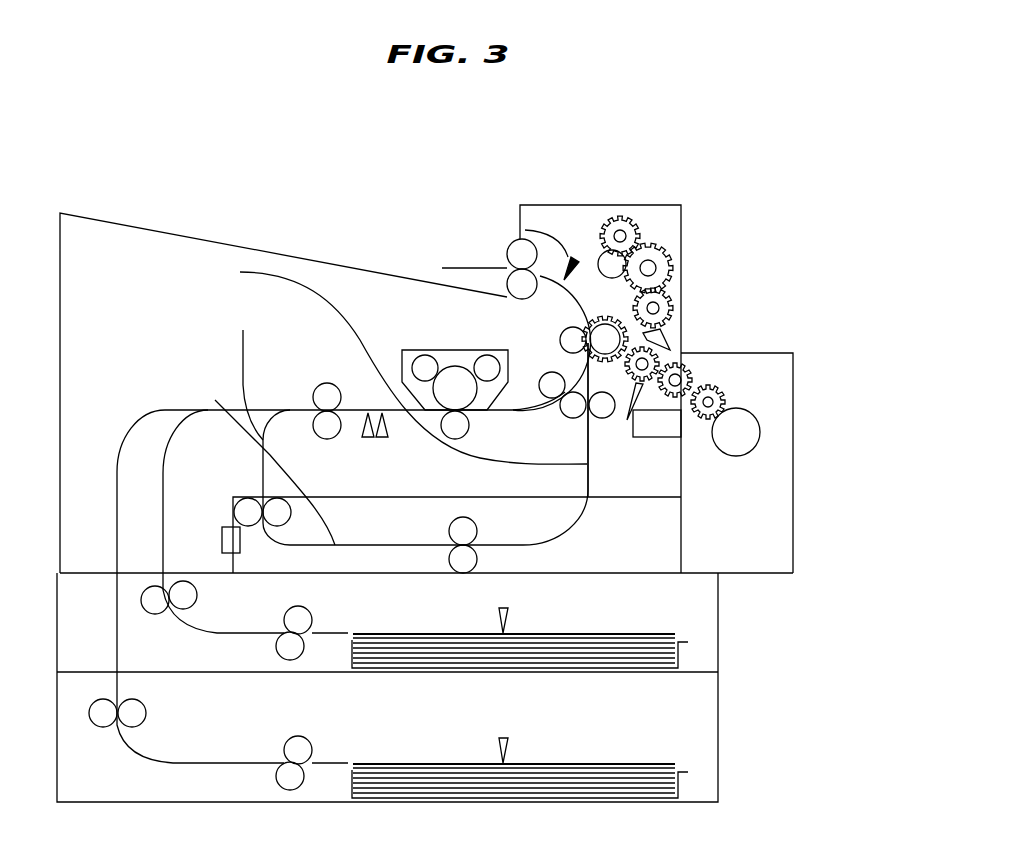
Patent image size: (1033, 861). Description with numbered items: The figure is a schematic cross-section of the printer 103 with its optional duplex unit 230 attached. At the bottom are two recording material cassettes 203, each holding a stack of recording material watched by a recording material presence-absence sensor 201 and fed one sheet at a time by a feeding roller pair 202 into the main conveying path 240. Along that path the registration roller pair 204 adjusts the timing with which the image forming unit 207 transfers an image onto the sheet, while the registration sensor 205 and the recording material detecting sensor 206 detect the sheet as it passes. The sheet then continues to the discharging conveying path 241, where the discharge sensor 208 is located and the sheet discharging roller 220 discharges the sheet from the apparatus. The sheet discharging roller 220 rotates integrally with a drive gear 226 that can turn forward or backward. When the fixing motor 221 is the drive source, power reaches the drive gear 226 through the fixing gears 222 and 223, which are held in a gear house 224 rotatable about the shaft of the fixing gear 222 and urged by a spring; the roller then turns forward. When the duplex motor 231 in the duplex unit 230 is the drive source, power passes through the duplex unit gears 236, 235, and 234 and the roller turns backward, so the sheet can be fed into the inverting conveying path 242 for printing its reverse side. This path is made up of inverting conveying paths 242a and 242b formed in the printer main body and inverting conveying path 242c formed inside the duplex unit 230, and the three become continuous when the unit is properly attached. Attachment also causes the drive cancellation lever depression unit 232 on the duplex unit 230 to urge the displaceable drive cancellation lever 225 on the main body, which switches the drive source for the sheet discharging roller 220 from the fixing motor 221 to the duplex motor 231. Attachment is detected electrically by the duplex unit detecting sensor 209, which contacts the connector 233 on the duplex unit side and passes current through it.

The printer 103 is at (158, 228).
The recording material presence-absence sensor 201 is at (508, 612).
The feeding roller pair 202 is at (312, 620).
The recording material cassette 203 is at (683, 640).
The registration roller pair 204 is at (328, 382).
The registration sensor 205 is at (362, 437).
The recording material detecting sensor 206 is at (388, 437).
The image forming unit 207 is at (457, 350).
The discharge sensor 208 is at (518, 240).
The duplex unit detecting sensor 209 is at (222, 540).
The sheet discharging roller 220 is at (574, 247).
The fixing motor 221 is at (600, 315).
The fixing gear 222 is at (672, 255).
The fixing gear 223 is at (678, 285).
The gear house 224 is at (676, 312).
The drive cancellation lever 225 is at (627, 420).
The drive gear 226 is at (595, 370).
The duplex unit 230 is at (770, 353).
The duplex motor 231 is at (762, 430).
The drive cancellation lever depression unit 232 is at (660, 437).
The connector 233 is at (240, 545).
The duplex unit gear 234 is at (665, 352).
The duplex unit gear 235 is at (695, 378).
The duplex unit gear 236 is at (730, 400).
The main conveying path 240 is at (305, 409).
The discharging conveying path 241 is at (565, 282).
The inverting conveying path 242 is at (323, 401).
The inverting conveying path 242a is at (243, 330).
The inverting conveying path 242b is at (240, 272).
The inverting conveying path 242c is at (245, 437).